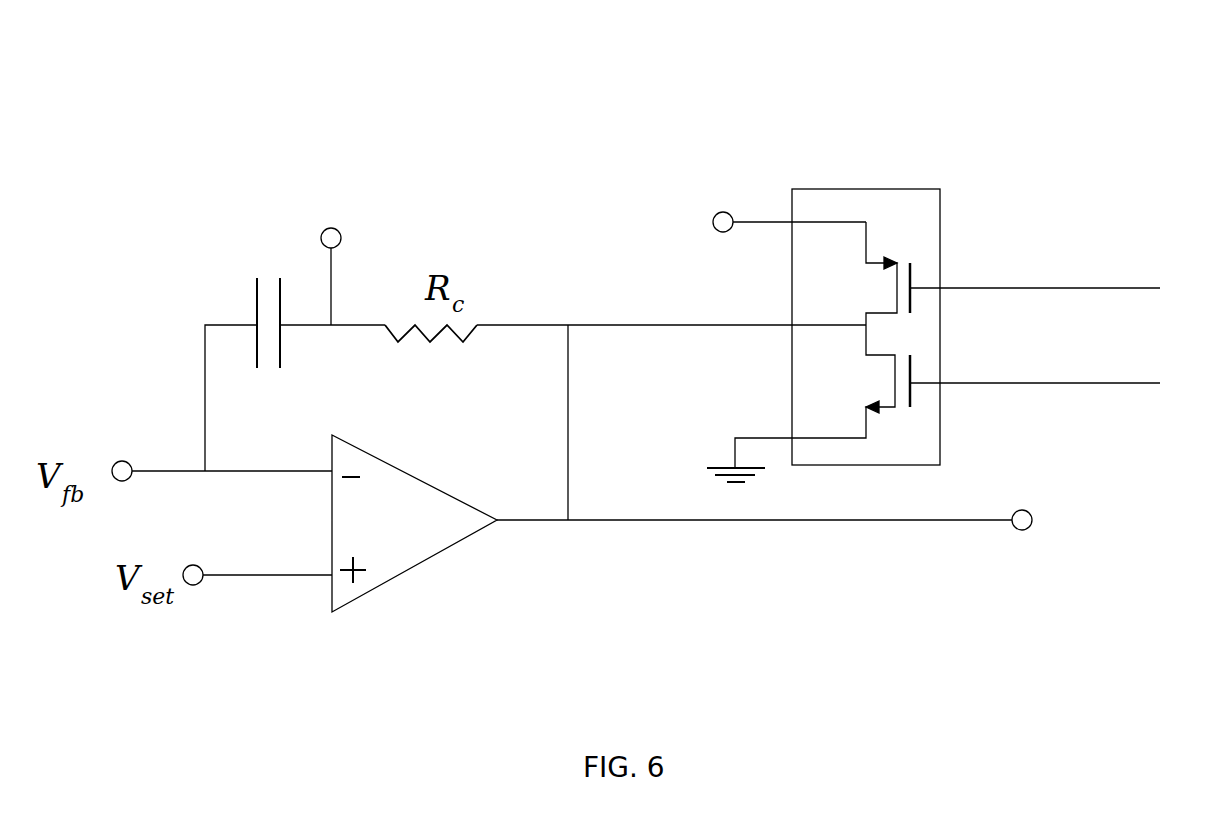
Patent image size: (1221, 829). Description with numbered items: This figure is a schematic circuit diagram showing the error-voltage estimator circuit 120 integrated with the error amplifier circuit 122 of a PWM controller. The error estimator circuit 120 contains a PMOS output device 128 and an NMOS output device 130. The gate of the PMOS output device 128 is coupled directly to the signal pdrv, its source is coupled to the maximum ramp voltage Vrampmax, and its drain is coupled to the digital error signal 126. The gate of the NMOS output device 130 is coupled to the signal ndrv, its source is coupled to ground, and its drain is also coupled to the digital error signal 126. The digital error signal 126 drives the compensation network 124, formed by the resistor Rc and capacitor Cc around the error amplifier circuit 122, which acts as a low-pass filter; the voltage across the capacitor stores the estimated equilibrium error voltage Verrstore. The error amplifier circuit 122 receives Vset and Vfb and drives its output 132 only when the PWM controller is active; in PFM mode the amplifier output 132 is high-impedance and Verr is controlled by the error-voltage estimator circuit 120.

The error estimator circuit 120 is at (914, 189).
The error amplifier circuit 122 is at (425, 565).
The compensation network 124 is at (358, 325).
The digital error signal 126 is at (684, 325).
The PMOS output device 128 is at (845, 260).
The NMOS output device 130 is at (860, 398).
The amplifier output 132 is at (653, 520).